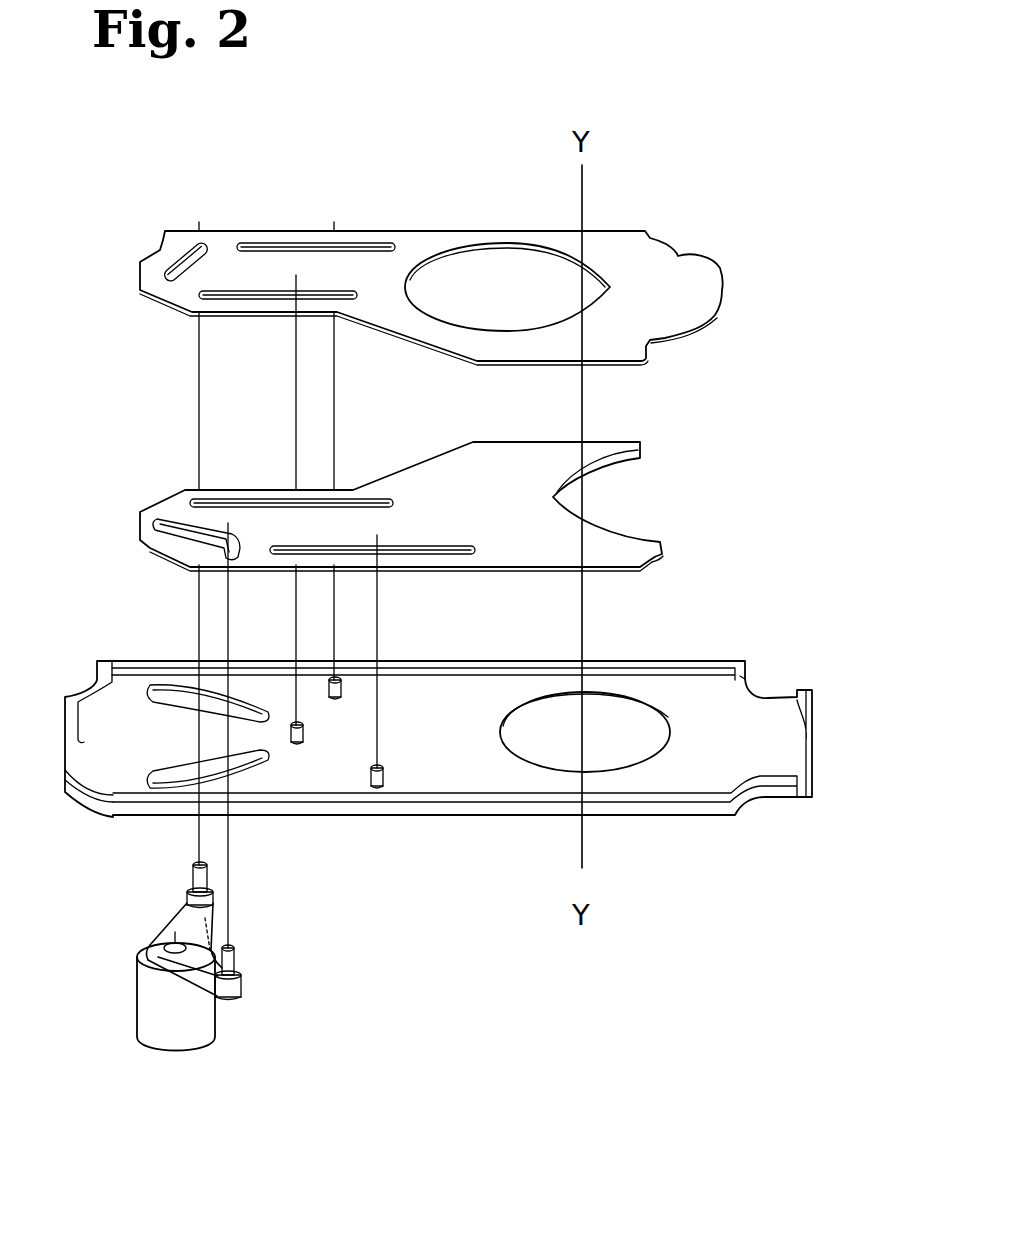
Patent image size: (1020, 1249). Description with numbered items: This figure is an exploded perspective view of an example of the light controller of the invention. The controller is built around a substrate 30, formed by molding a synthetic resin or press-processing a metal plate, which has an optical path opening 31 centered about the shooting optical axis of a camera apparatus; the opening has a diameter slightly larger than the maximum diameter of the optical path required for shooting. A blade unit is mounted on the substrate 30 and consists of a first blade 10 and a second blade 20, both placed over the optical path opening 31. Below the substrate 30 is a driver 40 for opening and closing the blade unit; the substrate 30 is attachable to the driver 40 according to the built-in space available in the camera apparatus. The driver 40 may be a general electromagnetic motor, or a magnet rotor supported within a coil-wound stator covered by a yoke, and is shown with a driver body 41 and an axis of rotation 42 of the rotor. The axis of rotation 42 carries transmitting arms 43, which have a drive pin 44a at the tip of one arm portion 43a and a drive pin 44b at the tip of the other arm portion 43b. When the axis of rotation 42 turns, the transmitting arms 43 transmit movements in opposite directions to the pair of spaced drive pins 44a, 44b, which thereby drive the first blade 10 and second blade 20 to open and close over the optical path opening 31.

The first blade 10 is at (673, 270).
The second blade 20 is at (623, 447).
The substrate 30 is at (457, 695).
The optical path opening 31 is at (617, 723).
The driver 40 is at (190, 1038).
The driver body 41 is at (222, 954).
The axis of rotation 42 is at (176, 943).
The transmitting arms 43 is at (196, 966).
The arm portion 43a is at (200, 927).
The arm portion 43b is at (238, 997).
The drive pin 44a is at (193, 880).
The drive pin 44b is at (242, 970).